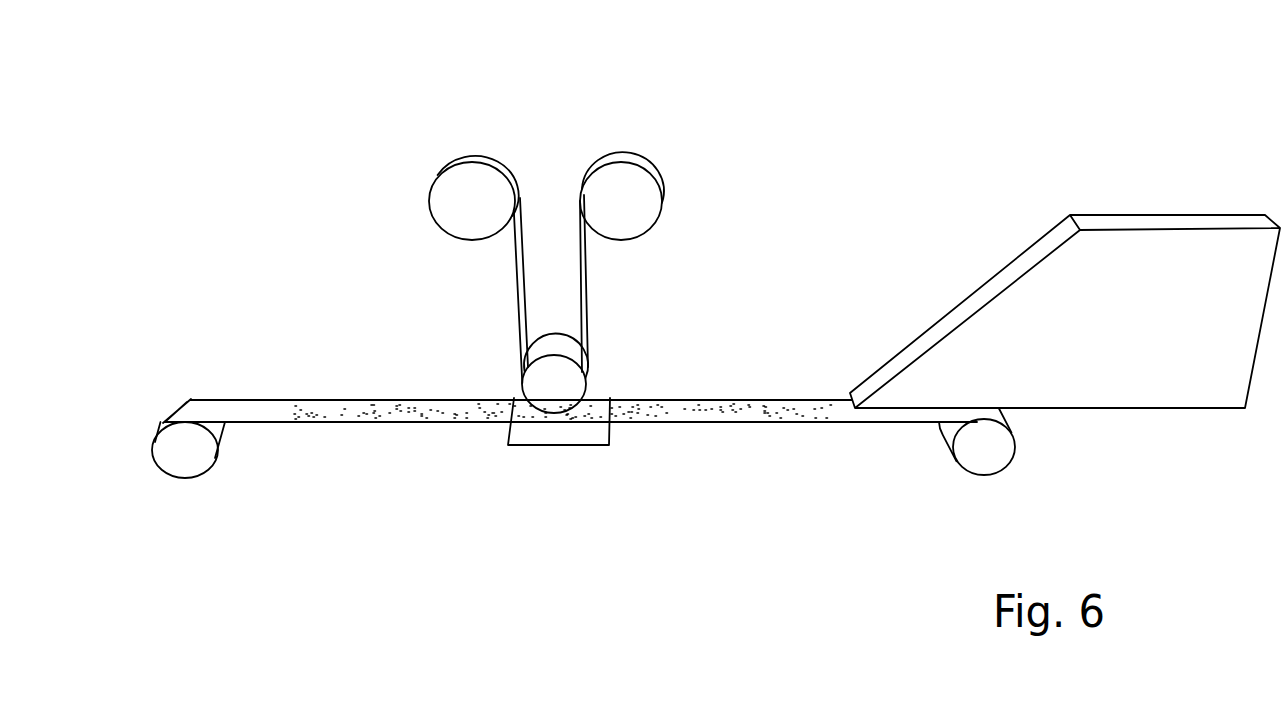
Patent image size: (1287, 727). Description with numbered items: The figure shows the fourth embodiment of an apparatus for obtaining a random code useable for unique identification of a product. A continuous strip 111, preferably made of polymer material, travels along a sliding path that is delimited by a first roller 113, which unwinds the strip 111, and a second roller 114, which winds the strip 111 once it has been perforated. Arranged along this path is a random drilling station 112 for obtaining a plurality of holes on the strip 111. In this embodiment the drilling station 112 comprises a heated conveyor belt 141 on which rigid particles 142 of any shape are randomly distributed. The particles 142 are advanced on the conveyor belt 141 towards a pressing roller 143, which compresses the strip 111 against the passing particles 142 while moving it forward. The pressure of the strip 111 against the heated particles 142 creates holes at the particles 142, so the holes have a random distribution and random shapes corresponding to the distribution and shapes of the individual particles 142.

The continuous strip 111 is at (524, 292).
The drilling station 112 is at (254, 135).
The first roller 113 is at (465, 176).
The second roller 114 is at (647, 182).
The heated conveyor belt 141 is at (242, 410).
The rigid particles 142 is at (373, 400).
The pressing roller 143 is at (575, 380).